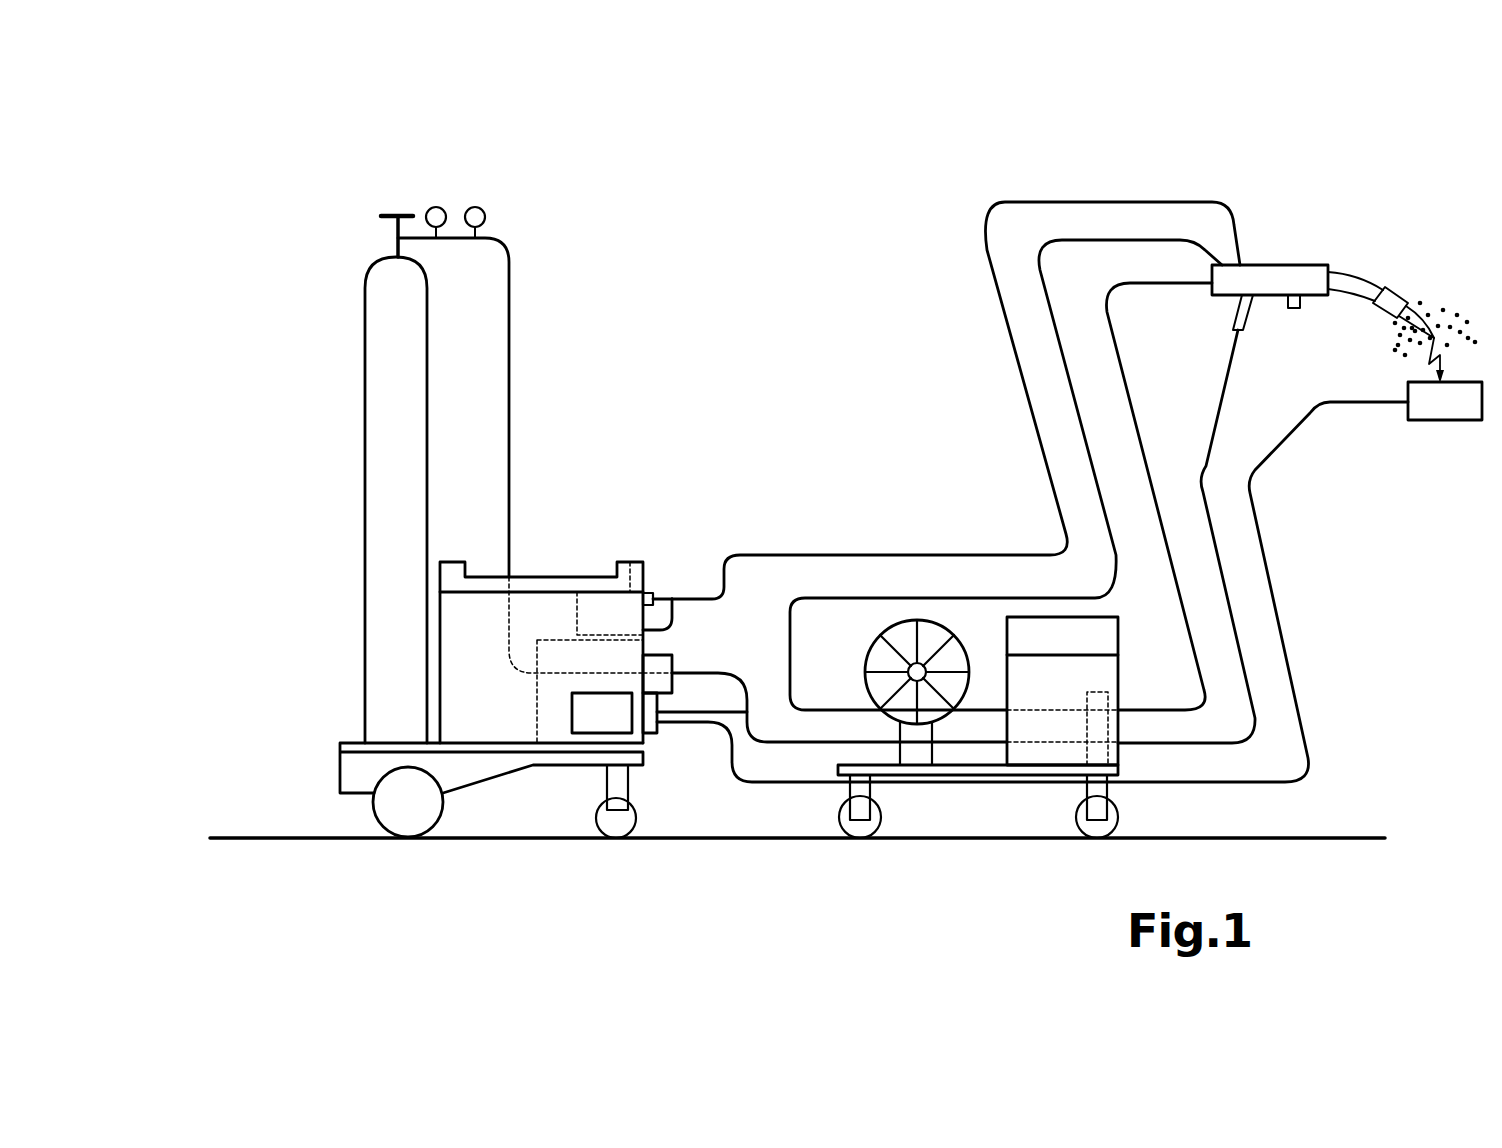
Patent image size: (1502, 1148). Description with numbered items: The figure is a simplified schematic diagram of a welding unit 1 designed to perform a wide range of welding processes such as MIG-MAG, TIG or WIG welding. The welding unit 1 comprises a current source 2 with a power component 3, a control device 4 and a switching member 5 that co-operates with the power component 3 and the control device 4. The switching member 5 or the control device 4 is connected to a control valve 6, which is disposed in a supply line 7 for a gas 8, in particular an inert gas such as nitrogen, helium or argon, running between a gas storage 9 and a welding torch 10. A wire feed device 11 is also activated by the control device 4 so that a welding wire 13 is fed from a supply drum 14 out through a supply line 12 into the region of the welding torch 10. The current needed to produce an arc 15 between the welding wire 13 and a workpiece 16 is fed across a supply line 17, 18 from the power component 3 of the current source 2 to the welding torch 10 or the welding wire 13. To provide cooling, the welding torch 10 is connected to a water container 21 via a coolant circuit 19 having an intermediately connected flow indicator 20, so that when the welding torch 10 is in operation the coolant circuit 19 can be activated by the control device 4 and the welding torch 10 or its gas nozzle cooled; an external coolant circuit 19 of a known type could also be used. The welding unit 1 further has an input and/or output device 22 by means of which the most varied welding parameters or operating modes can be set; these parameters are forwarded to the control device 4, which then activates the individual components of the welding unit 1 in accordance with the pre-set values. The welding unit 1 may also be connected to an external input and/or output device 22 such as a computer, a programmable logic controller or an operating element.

The welding unit 1 is at (290, 199).
The current source 2 is at (593, 438).
The power component 3 is at (595, 718).
The control device 4 is at (555, 710).
The switching member 5 is at (660, 755).
The control valve 6 is at (658, 688).
The supply line 7 is at (1251, 659).
The gas 8 is at (1416, 280).
The gas storage 9 is at (392, 338).
The welding torch 10 is at (1285, 275).
The wire feed device 11 is at (1180, 806).
The supply line 12 is at (1172, 535).
The welding wire 13 is at (1030, 708).
The supply drum 14 is at (925, 643).
The arc 15 is at (1408, 367).
The workpiece 16 is at (1440, 400).
The supply line 17 is at (962, 598).
The supply line 18 is at (1285, 613).
The coolant circuit 19 is at (788, 548).
The flow indicator 20 is at (660, 578).
The water container 21 is at (601, 604).
The input and/or output device 22 is at (640, 592).